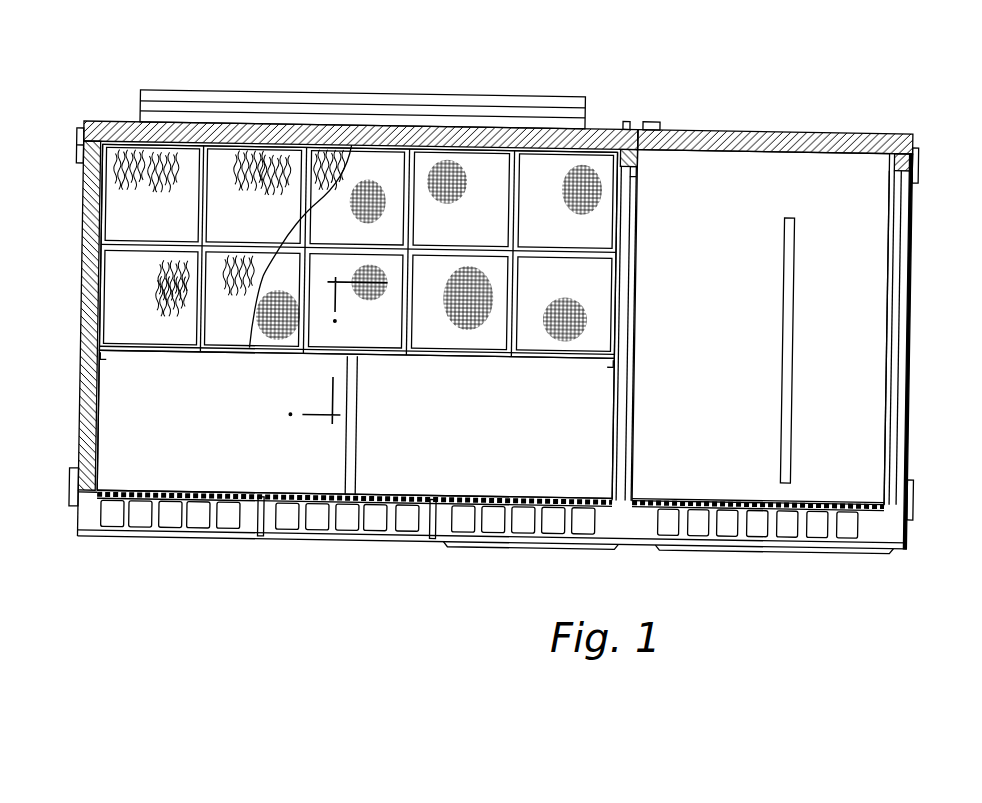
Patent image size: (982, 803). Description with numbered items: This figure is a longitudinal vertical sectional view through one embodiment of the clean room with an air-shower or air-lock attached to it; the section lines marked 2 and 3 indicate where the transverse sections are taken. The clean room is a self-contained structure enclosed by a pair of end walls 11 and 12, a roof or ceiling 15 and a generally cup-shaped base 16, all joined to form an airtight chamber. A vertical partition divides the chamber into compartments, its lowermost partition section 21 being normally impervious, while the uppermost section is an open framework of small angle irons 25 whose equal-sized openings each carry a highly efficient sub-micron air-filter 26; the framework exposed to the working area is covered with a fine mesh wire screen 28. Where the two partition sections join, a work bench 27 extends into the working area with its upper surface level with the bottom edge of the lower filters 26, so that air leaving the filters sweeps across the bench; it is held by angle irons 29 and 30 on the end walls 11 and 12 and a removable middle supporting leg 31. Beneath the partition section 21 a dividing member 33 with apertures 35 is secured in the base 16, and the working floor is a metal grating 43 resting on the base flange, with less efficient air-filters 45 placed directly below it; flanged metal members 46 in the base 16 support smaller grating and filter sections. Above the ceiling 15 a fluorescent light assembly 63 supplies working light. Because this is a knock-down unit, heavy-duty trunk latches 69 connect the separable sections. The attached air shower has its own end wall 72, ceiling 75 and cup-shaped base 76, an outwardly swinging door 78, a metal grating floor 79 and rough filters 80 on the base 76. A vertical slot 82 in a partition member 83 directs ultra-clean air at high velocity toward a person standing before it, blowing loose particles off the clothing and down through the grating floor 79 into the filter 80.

The section line 2- 2 is at (424, 38).
The section line 3- 3 is at (72, 409).
The end wall 11 is at (84, 228).
The end wall 12 is at (639, 152).
The ceiling 15 is at (110, 121).
The base 16 is at (84, 509).
The partition section 21 is at (477, 425).
The angle irons 25 is at (204, 243).
The sub-micron air-filter 26 is at (168, 201).
The work bench 27 is at (253, 346).
The wire screen 28 is at (484, 216).
The angle iron 29 is at (104, 356).
The angle iron 30 is at (618, 349).
The middle supporting leg 31 is at (366, 378).
The dividing member 33 is at (104, 520).
The apertures 35 is at (214, 519).
The metal grating 43 is at (177, 489).
The air-filters 45 is at (247, 490).
The flanged metal members 46 is at (271, 517).
The fluorescent light assembly 63 is at (242, 95).
The trunk latches 69 is at (77, 153).
The end wall 72 is at (895, 150).
The ceiling 75 is at (783, 120).
The base 76 is at (822, 537).
The door 78 is at (904, 397).
The metal grating floor 79 is at (738, 488).
The rough filters 80 is at (849, 494).
The vertical slot 82 is at (797, 274).
The partition member 83 is at (730, 311).